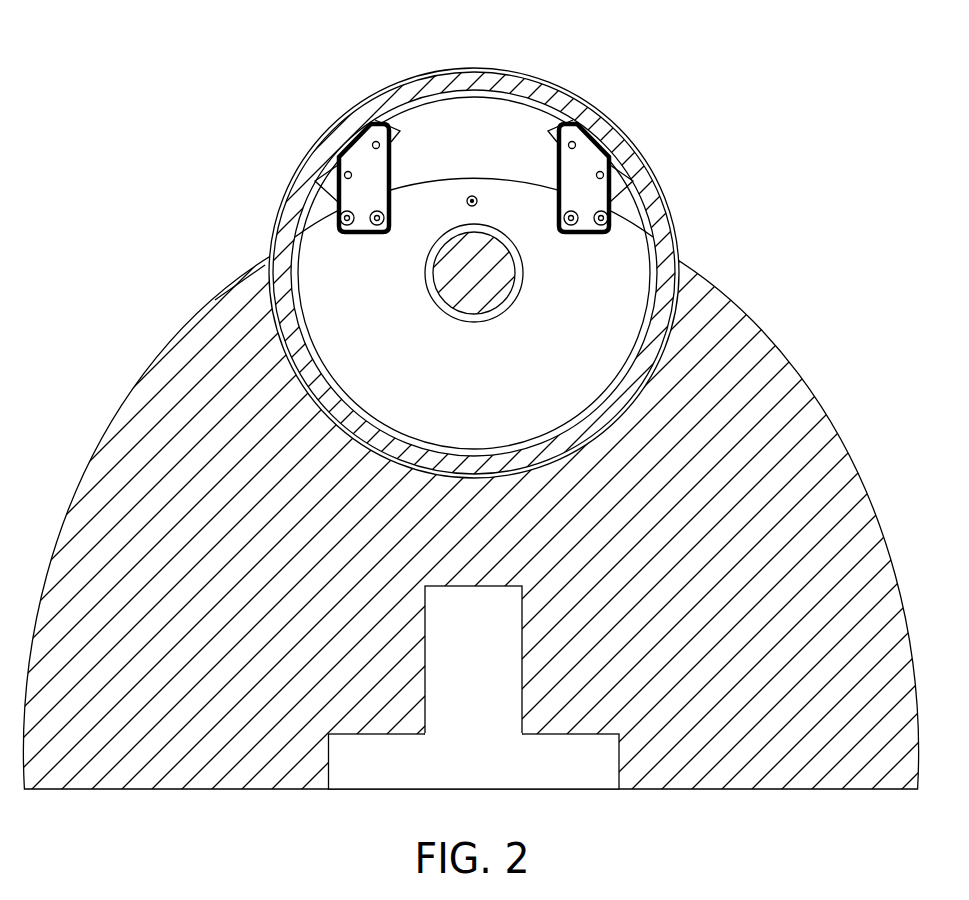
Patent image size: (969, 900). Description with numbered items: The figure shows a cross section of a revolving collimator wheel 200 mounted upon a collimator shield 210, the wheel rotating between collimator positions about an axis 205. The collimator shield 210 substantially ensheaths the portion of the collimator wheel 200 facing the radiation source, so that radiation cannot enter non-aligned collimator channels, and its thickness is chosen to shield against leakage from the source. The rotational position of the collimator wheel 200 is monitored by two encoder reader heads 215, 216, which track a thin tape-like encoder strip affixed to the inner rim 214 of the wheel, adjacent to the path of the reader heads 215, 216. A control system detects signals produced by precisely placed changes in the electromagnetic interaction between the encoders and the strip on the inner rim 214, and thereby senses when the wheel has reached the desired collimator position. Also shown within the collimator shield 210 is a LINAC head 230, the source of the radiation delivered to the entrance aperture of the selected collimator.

The revolving collimator wheel 200 is at (510, 98).
The axis 205 is at (448, 260).
The collimator shield 210 is at (748, 332).
The inner rim 214 is at (459, 86).
The encoder reader head 215 is at (362, 128).
The encoder reader head 216 is at (595, 125).
The LINAC head 230 is at (433, 660).